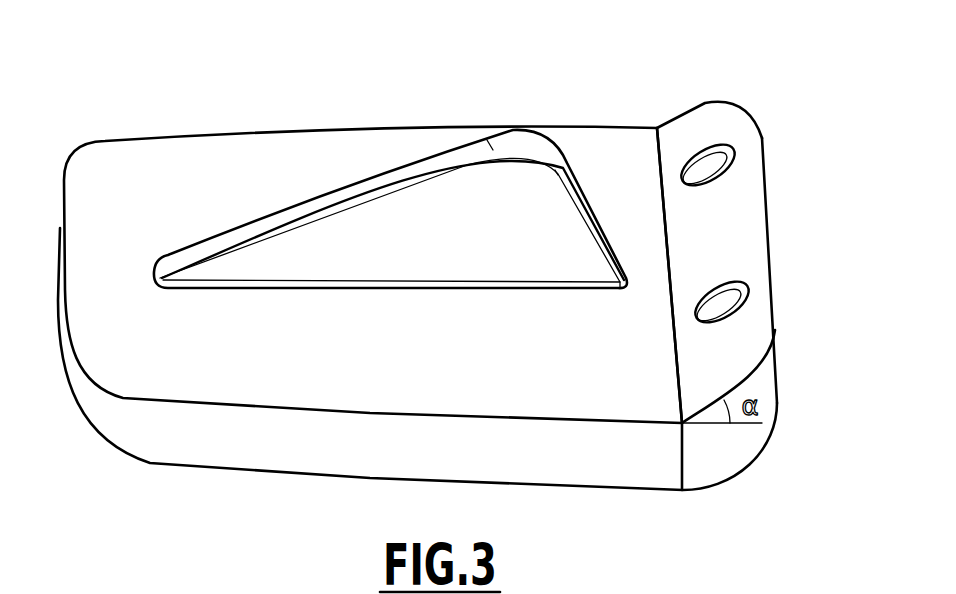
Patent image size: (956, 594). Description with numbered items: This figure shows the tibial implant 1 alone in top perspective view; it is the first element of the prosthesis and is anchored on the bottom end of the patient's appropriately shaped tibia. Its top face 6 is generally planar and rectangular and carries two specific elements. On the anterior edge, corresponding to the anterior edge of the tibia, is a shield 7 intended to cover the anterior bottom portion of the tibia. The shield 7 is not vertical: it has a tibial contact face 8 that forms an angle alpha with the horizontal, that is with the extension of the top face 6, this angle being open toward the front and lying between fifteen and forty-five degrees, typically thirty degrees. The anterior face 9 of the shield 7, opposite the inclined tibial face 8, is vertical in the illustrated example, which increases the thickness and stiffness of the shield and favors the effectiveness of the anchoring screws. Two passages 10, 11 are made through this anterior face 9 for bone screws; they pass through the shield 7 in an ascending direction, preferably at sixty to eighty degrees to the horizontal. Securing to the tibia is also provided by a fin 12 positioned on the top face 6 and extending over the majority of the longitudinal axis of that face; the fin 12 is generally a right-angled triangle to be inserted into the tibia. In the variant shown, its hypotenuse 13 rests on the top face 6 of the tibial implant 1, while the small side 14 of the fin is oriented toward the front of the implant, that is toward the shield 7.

The tibial implant 1 is at (350, 118).
The top face 6 is at (147, 195).
The shield 7 is at (740, 112).
The tibial contact face 8 is at (700, 237).
The anterior face 9 is at (772, 214).
The passage 10 is at (712, 172).
The passage 11 is at (727, 305).
The fin 12 is at (313, 253).
The hypotenuse 13 is at (488, 282).
The small side 14 is at (583, 187).